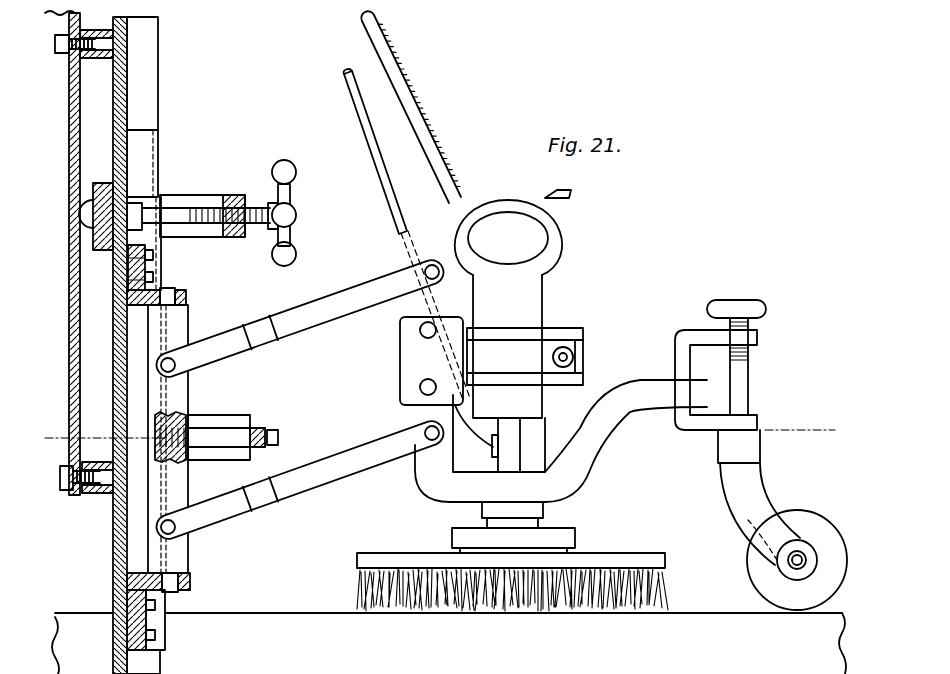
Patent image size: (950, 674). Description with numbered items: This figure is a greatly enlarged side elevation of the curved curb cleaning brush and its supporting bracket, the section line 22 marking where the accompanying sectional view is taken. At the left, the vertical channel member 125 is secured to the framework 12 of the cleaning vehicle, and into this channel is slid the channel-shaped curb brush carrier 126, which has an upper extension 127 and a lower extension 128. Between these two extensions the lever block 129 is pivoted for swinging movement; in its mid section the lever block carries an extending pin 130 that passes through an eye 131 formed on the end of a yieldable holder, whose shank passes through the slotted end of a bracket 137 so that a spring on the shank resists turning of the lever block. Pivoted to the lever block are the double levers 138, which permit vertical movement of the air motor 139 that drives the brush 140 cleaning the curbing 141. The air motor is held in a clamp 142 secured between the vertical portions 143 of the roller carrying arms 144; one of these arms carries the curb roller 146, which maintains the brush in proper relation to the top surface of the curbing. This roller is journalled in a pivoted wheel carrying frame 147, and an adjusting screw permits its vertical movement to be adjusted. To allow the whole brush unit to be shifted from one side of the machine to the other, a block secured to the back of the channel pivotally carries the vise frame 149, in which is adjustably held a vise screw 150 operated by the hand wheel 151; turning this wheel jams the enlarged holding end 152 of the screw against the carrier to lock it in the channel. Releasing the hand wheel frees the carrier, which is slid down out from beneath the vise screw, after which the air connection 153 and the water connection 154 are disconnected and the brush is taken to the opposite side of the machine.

The framework 12 is at (70, 296).
The section line 22 is at (56, 440).
The vertical channel member 125 is at (147, 82).
The curb brush carrier 126 is at (150, 160).
The upper extension 127 is at (188, 298).
The lower extension 128 is at (190, 583).
The lever block 129 is at (192, 397).
The extending pin 130 is at (280, 432).
The eye 131 is at (262, 426).
The bracket 137 is at (219, 457).
The double levers 138 is at (330, 318).
The air motor 139 is at (530, 304).
The brush 140 is at (667, 520).
The curbing 141 is at (722, 611).
The clamp 142 is at (574, 345).
The vertical portions 143 is at (418, 372).
The roller carrying arms 144 is at (600, 451).
The curb roller 146 is at (802, 521).
The pivoted wheel carrying frame 147 is at (690, 330).
The vise frame 149 is at (226, 200).
The vise screw 150 is at (296, 178).
The hand wheel 151 is at (296, 241).
The enlarged holding end 152 is at (140, 216).
The air connection 153 is at (390, 70).
The water connection 154 is at (352, 70).